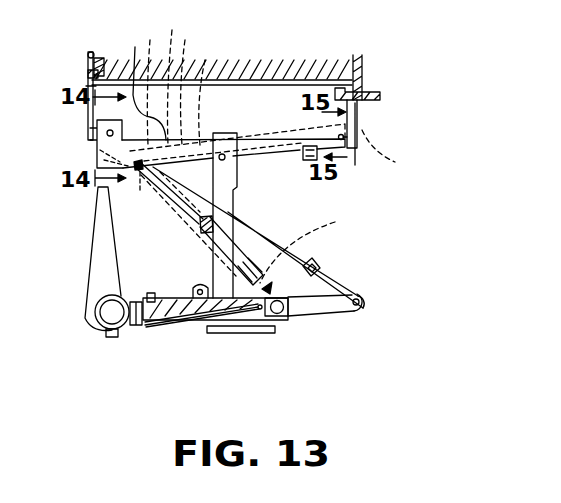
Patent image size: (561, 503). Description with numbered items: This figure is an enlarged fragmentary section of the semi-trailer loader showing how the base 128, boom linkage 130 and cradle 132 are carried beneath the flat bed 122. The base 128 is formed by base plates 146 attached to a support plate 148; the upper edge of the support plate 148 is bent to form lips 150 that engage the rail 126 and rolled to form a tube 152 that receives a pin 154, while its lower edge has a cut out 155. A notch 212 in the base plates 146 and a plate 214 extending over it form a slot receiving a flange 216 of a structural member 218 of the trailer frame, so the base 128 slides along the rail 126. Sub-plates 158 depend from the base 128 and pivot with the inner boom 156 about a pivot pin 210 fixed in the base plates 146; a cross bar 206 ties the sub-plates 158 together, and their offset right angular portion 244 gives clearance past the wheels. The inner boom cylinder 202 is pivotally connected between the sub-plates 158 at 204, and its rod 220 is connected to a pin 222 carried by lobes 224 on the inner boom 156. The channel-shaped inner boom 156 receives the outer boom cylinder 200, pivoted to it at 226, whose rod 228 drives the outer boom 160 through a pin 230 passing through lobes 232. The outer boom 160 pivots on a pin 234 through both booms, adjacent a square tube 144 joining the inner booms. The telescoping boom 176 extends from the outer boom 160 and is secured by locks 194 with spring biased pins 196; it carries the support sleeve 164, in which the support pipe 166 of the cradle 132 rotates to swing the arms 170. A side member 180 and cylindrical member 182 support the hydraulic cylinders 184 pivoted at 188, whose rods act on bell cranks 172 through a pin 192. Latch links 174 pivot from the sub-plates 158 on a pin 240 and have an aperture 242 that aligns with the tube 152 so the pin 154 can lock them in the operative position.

The flat bed 122 is at (262, 72).
The rail 126 is at (88, 75).
The base 128 is at (364, 174).
The boom linkage 130 is at (385, 256).
The cradle 132 is at (72, 286).
The square tube 144 is at (326, 250).
The base plates 146 is at (276, 90).
The support plate 148 is at (88, 86).
The lips 150 is at (101, 58).
The tube 152 is at (90, 52).
The pin 154 is at (88, 60).
The cut out 155 is at (97, 128).
The inner boom 156 is at (272, 250).
The sub-plates 158 is at (97, 155).
The outer boom 160 is at (330, 306).
The support sleeve 164 is at (95, 312).
The support pipe 166 is at (95, 326).
The arms 170 is at (100, 243).
The bell cranks 172 is at (110, 338).
The latch links 174 is at (233, 190).
The telescoping boom 176 is at (137, 302).
The side member 180 is at (184, 298).
The cylindrical member 182 is at (288, 298).
The hydraulic cylinders 184 is at (185, 320).
The pivotal connection 188 is at (262, 333).
The pin 192 is at (116, 336).
The locks 194 is at (162, 300).
The spring biased pins 196 is at (150, 293).
The outer boom cylinder 200 is at (200, 232).
The inner boom cylinder 202 is at (300, 118).
The pivotal connection 204 is at (400, 166).
The cross bar 206 is at (305, 154).
The pivot pin 210 is at (100, 140).
The notch 212 is at (358, 138).
The plate 214 is at (355, 88).
The flange 216 is at (358, 114).
The structural member 218 is at (362, 93).
The rod 220 is at (223, 93).
The pin 222 is at (198, 83).
The lobes 224 is at (172, 74).
The pivotal connection 226 is at (144, 193).
The rod 228 is at (282, 240).
The pin 230 is at (284, 308).
The lobes 232 is at (335, 222).
The pin 234 is at (360, 303).
The pin 240 is at (224, 154).
The aperture 242 is at (178, 322).
The offset right angular portion 244 is at (143, 84).